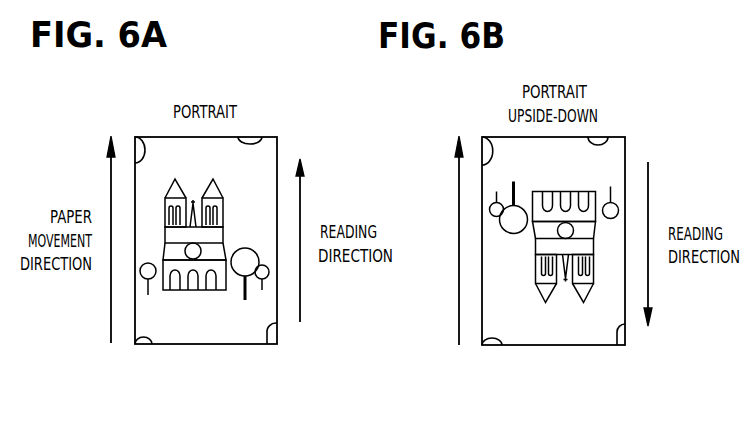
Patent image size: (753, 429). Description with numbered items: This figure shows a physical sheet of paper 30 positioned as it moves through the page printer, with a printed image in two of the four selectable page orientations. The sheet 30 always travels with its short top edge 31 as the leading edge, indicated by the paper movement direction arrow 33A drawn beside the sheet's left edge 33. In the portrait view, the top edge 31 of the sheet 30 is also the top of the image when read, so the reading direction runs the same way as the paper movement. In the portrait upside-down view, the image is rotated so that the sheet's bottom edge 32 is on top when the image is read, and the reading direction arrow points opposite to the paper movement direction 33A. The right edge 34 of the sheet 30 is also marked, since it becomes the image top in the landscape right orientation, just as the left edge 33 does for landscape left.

In FIG. 6A, the physical sheet of paper 30 is at (160, 157).
In FIG. 6B, the physical sheet of paper 30 is at (508, 158).
In FIG. 6A, the top edge 31 is at (263, 135).
In FIG. 6B, the top edge 31 is at (608, 137).
In FIG. 6A, the bottom edge 32 is at (133, 345).
In FIG. 6B, the bottom edge 32 is at (482, 345).
In FIG. 6A, the left edge 33 is at (134, 137).
In FIG. 6B, the left edge 33 is at (482, 137).
In FIG. 6A, the paper movement direction arrow 33A is at (110, 178).
In FIG. 6A, the right edge 34 is at (267, 344).
In FIG. 6B, the right edge 34 is at (617, 345).